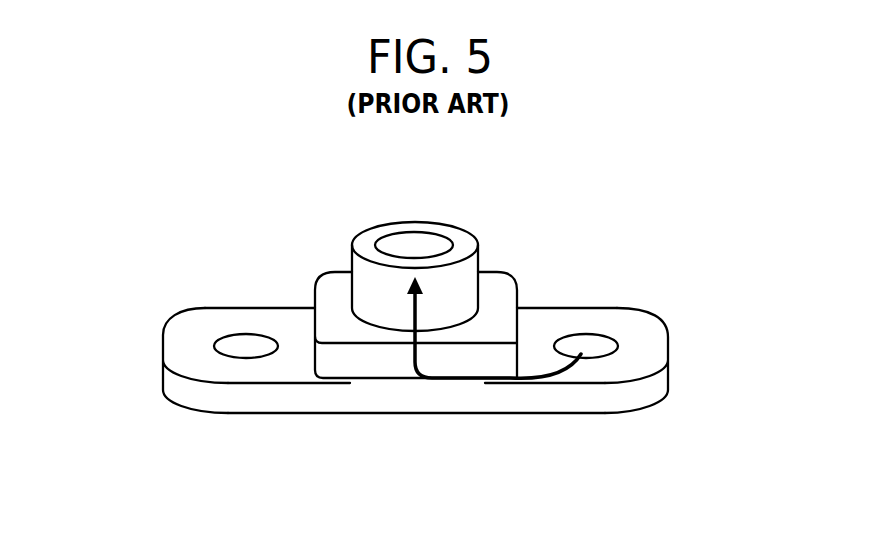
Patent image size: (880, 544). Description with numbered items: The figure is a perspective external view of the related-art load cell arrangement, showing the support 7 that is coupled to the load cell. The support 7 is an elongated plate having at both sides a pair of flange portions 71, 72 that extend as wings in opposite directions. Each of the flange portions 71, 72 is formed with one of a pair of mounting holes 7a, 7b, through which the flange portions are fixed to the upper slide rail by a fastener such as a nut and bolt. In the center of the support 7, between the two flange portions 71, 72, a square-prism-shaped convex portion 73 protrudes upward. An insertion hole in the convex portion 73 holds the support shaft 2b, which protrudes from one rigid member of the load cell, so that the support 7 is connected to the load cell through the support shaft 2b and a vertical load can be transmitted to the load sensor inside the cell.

The support 7 is at (404, 350).
The flange portion 71 is at (635, 318).
The flange portion 72 is at (190, 330).
The convex portion 73 is at (330, 283).
The mounting hole 7a is at (588, 345).
The mounting hole 7b is at (242, 344).
The support shaft 2b is at (475, 268).